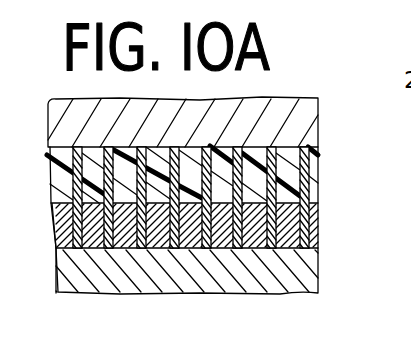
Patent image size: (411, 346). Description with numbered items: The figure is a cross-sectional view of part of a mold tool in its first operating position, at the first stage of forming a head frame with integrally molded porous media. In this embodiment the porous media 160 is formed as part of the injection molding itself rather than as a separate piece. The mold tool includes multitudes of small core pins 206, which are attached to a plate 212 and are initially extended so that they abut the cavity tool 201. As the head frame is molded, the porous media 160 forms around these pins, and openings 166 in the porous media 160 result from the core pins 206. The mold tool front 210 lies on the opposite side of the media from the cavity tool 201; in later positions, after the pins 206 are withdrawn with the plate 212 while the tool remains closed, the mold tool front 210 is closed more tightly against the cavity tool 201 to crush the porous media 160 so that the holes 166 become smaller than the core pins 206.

The cavity tool 201 is at (290, 108).
The porous media 160 is at (317, 177).
The openings 166 is at (305, 188).
The core pins 206 is at (305, 238).
The plate 212 is at (300, 275).
The mold tool front 210 is at (55, 230).